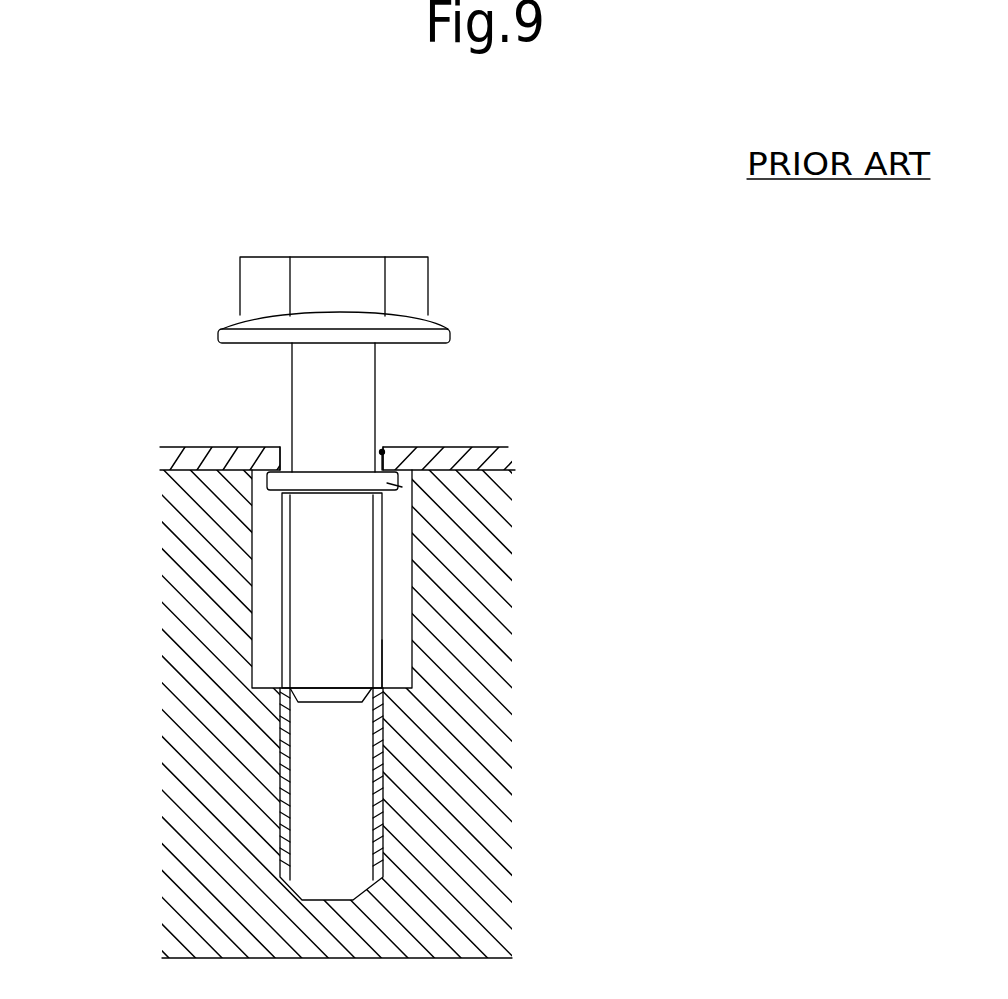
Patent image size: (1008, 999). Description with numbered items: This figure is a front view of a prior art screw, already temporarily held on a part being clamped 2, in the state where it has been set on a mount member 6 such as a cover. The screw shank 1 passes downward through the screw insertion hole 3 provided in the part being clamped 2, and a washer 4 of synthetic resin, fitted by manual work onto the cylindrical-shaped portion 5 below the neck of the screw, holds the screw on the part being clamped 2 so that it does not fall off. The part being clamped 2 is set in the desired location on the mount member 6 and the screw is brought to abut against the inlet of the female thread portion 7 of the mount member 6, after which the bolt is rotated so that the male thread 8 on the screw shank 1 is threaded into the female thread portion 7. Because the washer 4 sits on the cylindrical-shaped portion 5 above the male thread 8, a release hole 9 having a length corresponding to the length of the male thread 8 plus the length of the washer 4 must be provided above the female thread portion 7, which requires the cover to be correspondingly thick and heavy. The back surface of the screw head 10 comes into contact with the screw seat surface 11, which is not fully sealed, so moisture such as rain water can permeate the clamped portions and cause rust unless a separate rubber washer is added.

The screw shank 1 is at (333, 607).
The part being clamped 2 is at (477, 457).
The screw insertion hole 3 is at (382, 450).
The washer 4 is at (413, 498).
The cylindrical-shaped portion 5 is at (315, 388).
The mount member 6 is at (480, 725).
The female thread portion 7 is at (287, 807).
The male thread 8 is at (377, 662).
The release hole 9 is at (247, 580).
The screw head 10 is at (358, 273).
The screw seat surface 11 is at (263, 442).